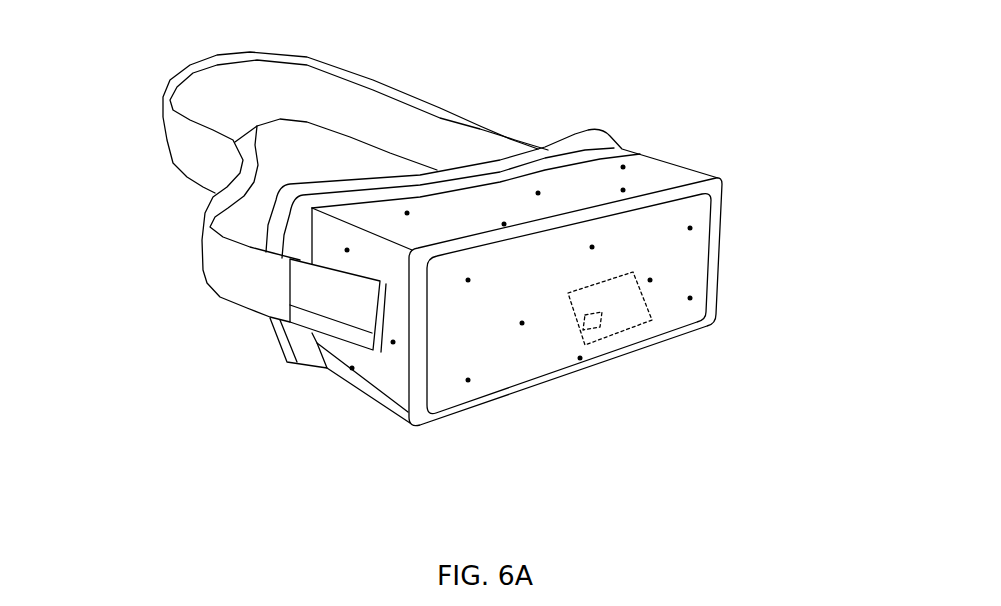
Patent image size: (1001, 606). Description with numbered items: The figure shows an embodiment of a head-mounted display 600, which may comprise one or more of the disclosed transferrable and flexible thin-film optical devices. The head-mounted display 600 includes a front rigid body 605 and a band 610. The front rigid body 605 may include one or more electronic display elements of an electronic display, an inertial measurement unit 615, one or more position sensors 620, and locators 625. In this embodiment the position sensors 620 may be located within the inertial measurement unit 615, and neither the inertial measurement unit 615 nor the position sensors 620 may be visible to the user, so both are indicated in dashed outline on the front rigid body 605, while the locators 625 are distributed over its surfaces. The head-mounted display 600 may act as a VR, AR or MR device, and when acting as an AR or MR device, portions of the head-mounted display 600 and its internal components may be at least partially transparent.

The head-mounted display 600 is at (109, 55).
The front rigid body 605 is at (728, 176).
The band 610 is at (447, 103).
The inertial measurement unit 615 is at (658, 318).
The position sensors 620 is at (585, 332).
The locators 625 is at (694, 297).